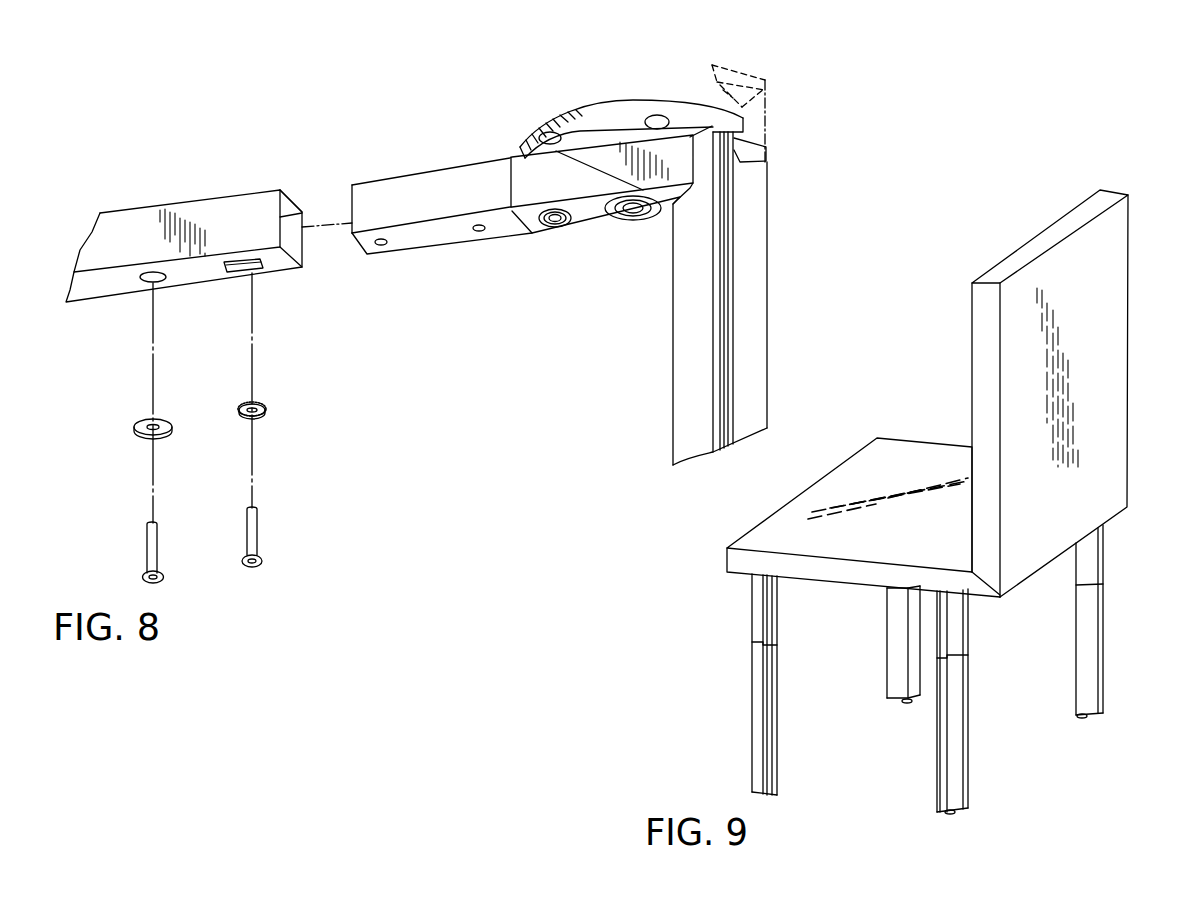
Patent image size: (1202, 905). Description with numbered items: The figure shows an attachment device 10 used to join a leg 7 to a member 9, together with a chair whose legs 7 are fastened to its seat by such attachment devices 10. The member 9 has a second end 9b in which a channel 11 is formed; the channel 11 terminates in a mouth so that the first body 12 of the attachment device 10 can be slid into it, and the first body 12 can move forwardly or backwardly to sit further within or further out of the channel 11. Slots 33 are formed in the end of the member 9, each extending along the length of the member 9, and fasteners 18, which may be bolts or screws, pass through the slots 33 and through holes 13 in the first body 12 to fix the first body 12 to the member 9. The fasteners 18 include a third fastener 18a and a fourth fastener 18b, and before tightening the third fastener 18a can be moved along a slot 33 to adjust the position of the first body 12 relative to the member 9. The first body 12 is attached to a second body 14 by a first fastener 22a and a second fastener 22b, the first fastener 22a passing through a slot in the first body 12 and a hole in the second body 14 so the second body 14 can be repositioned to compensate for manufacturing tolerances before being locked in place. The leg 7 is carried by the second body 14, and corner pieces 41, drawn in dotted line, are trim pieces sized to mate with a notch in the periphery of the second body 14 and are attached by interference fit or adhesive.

In FIG. 8, the leg 7 is at (748, 297).
In FIG. 9, the leg 7 is at (752, 753).
In FIG. 8, the member 9 is at (193, 200).
In FIG. 8, the second end 9b is at (283, 190).
In FIG. 9, the attachment device 10 is at (737, 586).
In FIG. 8, the channel 11 is at (287, 203).
In FIG. 8, the first body 12 is at (412, 178).
In FIG. 8, the hole 13 is at (381, 246).
In FIG. 8, the second body 14 is at (563, 112).
In FIG. 8, the fastener 18 is at (147, 543).
In FIG. 8, the third fastener 18a is at (262, 560).
In FIG. 8, the fourth fastener 18b is at (145, 578).
In FIG. 8, the first fastener 22a is at (553, 226).
In FIG. 8, the second fastener 22b is at (633, 216).
In FIG. 8, the slot 33 is at (157, 283).
In FIG. 8, the corner piece 41 is at (780, 78).